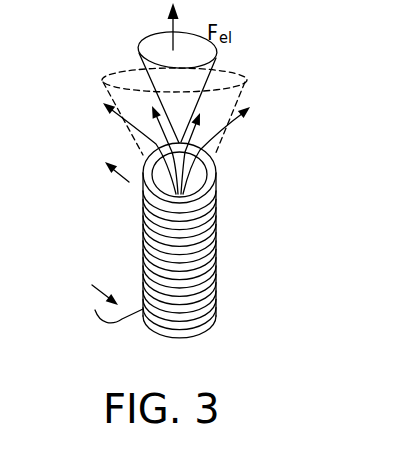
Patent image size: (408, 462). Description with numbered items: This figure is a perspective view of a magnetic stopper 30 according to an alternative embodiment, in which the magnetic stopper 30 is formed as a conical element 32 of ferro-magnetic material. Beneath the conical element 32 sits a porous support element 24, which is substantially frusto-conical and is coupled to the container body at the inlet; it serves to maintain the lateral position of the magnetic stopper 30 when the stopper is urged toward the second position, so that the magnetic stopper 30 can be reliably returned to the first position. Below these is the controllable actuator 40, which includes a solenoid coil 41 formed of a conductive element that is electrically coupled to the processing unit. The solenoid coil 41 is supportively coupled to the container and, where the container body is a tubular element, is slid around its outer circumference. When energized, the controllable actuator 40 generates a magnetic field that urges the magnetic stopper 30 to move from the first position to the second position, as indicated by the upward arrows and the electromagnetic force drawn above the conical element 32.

The porous support element 24 is at (233, 125).
The magnetic stopper 30 is at (207, 73).
The conical element 32 is at (146, 54).
The controllable actuator 40 is at (143, 200).
The solenoid coil 41 is at (143, 258).